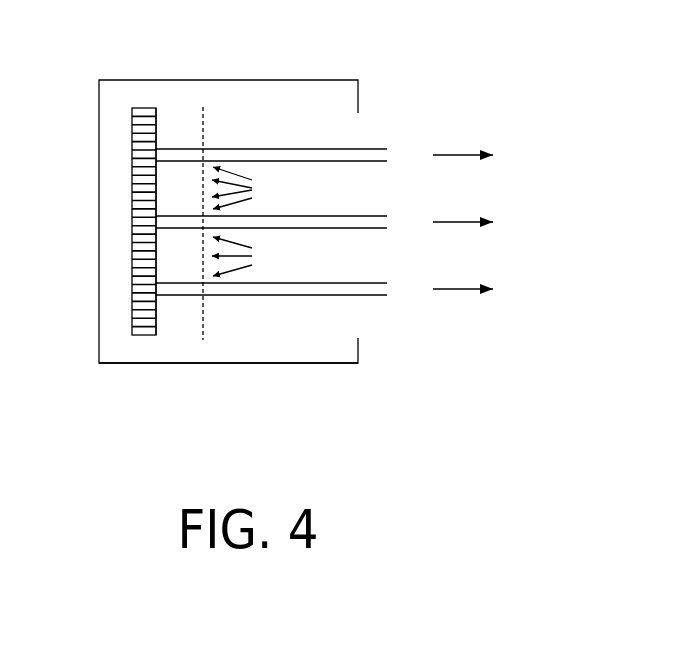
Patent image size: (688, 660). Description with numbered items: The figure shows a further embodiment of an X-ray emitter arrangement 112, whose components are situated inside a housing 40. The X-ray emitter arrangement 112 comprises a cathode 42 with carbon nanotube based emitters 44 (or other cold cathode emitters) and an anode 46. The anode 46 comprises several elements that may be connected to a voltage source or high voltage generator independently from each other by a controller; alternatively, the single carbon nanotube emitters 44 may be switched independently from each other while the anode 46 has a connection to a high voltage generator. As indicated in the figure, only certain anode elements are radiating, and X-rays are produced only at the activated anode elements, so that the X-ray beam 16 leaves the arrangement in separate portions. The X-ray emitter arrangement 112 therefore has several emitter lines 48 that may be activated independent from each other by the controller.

The X-ray emitter arrangement 112 is at (330, 80).
The housing 40 is at (125, 363).
The cathode 42 is at (136, 108).
The carbon nanotube based emitters 44 is at (152, 108).
The anode 46 is at (205, 330).
The X-ray beam 16 is at (343, 222).
The emitter lines 48 is at (252, 221).